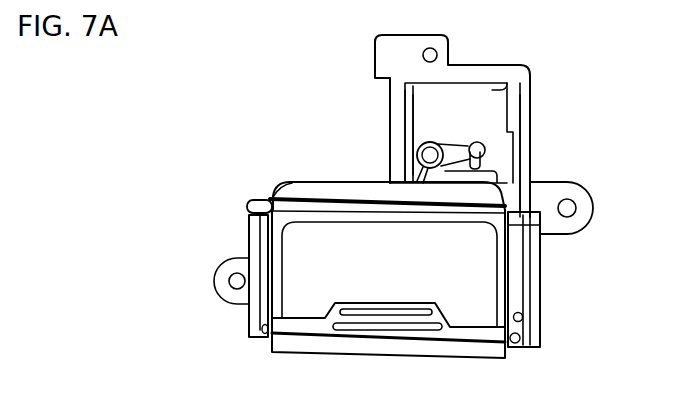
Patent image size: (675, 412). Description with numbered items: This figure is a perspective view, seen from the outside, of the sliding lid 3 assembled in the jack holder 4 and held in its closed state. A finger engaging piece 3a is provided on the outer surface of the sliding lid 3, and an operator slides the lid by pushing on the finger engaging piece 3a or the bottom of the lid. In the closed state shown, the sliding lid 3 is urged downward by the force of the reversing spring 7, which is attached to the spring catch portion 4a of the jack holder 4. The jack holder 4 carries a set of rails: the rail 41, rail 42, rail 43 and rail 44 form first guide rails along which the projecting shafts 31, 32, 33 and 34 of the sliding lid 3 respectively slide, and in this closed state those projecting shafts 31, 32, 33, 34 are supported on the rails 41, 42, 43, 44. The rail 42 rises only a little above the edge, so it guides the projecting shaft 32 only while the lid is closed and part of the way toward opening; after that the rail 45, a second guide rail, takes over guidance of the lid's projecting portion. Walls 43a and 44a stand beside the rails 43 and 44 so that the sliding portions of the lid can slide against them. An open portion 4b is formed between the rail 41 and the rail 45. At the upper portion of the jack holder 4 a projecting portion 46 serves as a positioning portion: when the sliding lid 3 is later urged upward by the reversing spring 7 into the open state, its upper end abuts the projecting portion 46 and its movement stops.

The sliding lid 3 is at (318, 295).
The finger engaging piece 3a is at (365, 330).
The jack holder 4 is at (358, 92).
The spring catch portion 4a is at (473, 145).
The open portion 4b is at (417, 110).
The reversing spring 7 is at (417, 160).
The projecting shaft 31 is at (522, 213).
The projecting shaft 32 is at (247, 203).
The projecting shaft 33 is at (512, 343).
The projecting shaft 34 is at (263, 337).
The rail 41 is at (518, 153).
The rail 42 is at (273, 198).
The rail 43 is at (515, 282).
The wall 43a is at (518, 315).
The rail 44 is at (265, 230).
The wall 44a is at (263, 257).
The rail 45 is at (395, 147).
The projecting portion 46 is at (428, 82).